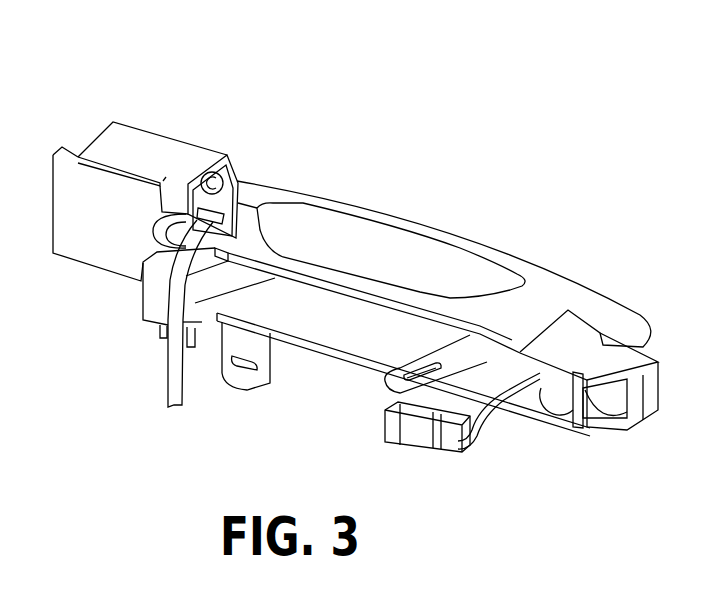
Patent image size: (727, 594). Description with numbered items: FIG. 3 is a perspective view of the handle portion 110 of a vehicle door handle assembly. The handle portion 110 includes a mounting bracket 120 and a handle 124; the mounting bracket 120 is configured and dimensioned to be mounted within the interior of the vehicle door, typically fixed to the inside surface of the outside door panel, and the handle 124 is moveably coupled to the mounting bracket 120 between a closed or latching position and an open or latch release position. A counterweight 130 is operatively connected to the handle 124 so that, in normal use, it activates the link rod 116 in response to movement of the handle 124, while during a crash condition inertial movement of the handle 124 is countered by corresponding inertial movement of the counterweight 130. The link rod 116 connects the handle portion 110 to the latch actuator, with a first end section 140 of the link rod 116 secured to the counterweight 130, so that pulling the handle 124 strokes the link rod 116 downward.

The handle portion 110 is at (122, 93).
The link rod 116 is at (173, 378).
The mounting bracket 120 is at (339, 333).
The handle 124 is at (527, 268).
The counterweight 130 is at (148, 155).
The first end section 140 is at (193, 248).